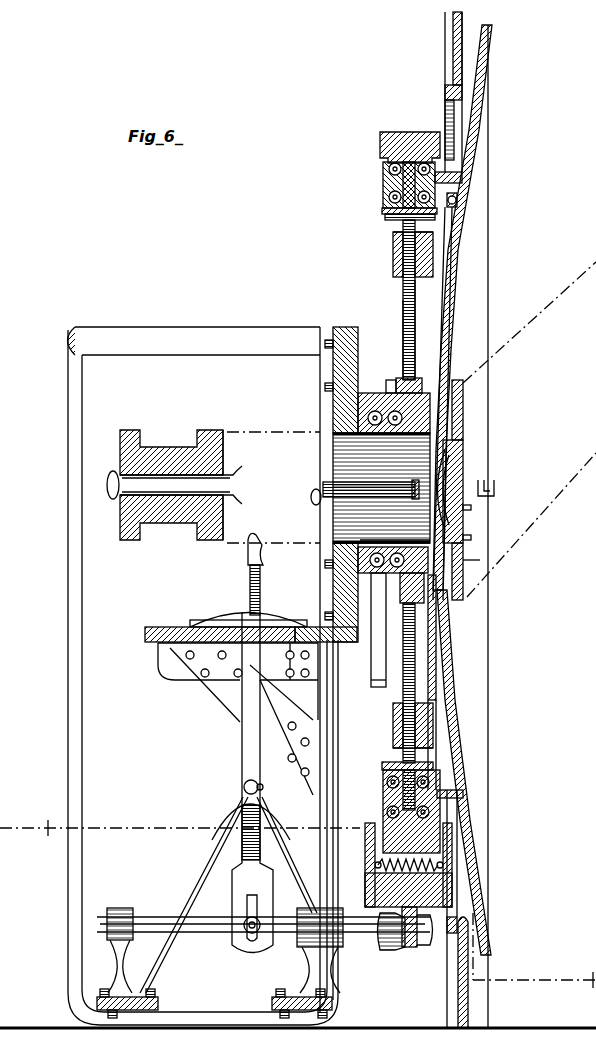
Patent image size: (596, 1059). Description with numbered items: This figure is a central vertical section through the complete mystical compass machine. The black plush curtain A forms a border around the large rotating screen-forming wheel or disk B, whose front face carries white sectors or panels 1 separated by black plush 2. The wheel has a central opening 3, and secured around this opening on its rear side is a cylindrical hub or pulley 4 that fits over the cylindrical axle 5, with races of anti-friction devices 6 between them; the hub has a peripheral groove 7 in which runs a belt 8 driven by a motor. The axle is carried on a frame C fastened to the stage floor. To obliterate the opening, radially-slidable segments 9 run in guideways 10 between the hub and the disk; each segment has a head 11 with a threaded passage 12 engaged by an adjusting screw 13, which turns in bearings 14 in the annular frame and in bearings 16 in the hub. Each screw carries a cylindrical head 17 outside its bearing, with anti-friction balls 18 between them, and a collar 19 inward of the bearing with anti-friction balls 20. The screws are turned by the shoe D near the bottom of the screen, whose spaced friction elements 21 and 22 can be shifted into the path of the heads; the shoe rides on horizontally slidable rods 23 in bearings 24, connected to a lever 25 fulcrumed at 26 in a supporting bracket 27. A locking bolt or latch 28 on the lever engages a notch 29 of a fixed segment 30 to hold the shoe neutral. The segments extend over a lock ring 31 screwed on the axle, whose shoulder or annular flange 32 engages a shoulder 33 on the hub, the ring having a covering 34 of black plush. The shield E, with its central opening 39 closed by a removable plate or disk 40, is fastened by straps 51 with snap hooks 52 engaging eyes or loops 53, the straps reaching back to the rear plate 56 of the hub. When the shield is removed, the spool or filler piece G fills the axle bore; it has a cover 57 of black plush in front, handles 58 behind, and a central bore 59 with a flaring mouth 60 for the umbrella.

The white sectors or panels 1 is at (480, 202).
The black plush 2 is at (465, 505).
The central opening 3 is at (448, 365).
The cylindrical hub or pulley 4 is at (395, 380).
The cylindrical axle 5 is at (333, 543).
The races of anti-friction devices 6 is at (333, 418).
The peripheral groove 7 is at (371, 580).
The belt 8 is at (386, 385).
The radially-slidable segments 9 is at (443, 307).
The guideways 10 is at (404, 318).
The head 11 is at (393, 258).
The threaded passage 12 is at (394, 277).
The adjusting screw 13 is at (404, 290).
The bearings 14 is at (383, 188).
The bearings 16 is at (407, 340).
The cylindrical head 17 is at (400, 134).
The anti-friction balls 18 is at (380, 172).
The collar 19 is at (383, 219).
The anti-friction balls 20 is at (384, 211).
The friction element 21 is at (382, 792).
The friction element 22 is at (452, 835).
The horizontally slidable rods 23 is at (216, 934).
The bearings 24 is at (118, 912).
The lever 25 is at (248, 880).
The fulcrum 26 is at (245, 790).
The supporting bracket 27 is at (190, 888).
The locking bolt or latch 28 is at (264, 612).
The notch 29 is at (250, 560).
The fixed segment 30 is at (225, 614).
The lock ring 31 is at (412, 542).
The shoulder or annular flange 32 is at (447, 612).
The shoulder 33 is at (405, 600).
The covering of black plush 34 is at (475, 560).
The central opening 39 is at (470, 520).
The plate or disk 40 is at (465, 440).
The straps 51 is at (330, 488).
The snap hooks 52 is at (415, 482).
The eyes or loops 53 is at (495, 468).
The rear plate 56 is at (333, 440).
The cover 57 is at (240, 440).
The handles 58 is at (112, 488).
The bore 59 is at (185, 528).
The flaring mouth 60 is at (240, 486).
The curtain A is at (466, 1000).
The screen-forming wheel or disk B is at (490, 242).
The frame C is at (82, 638).
The shoe D is at (402, 916).
The shield E is at (465, 415).
The spool or filler piece G is at (190, 445).